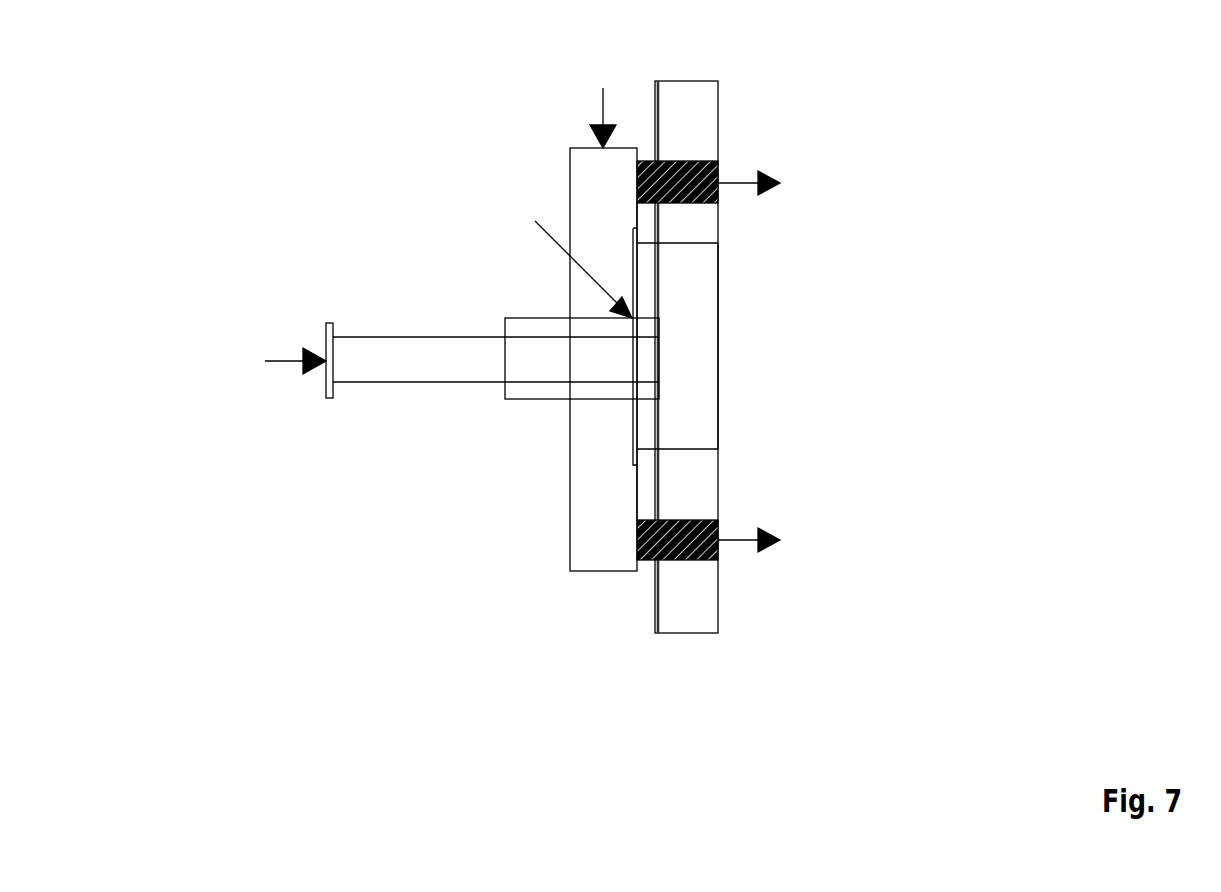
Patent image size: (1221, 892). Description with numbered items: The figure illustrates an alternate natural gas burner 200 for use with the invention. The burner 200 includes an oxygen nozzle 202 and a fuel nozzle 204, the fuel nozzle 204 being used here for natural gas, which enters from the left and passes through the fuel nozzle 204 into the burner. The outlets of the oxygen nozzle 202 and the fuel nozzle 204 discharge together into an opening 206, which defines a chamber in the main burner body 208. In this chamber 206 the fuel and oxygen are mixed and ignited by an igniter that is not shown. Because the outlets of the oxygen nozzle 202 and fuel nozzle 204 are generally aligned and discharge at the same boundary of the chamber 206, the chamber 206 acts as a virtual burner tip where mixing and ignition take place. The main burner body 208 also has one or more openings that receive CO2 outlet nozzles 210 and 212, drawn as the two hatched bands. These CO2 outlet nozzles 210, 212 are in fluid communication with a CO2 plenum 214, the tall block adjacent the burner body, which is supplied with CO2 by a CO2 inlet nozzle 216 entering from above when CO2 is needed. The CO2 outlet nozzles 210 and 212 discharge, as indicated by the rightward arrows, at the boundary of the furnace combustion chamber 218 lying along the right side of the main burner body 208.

The natural gas burner 200 is at (737, 64).
The oxygen nozzle 202 is at (515, 317).
The fuel nozzle 204 is at (392, 337).
The opening 206 is at (702, 341).
The main burner body 208 is at (665, 80).
The CO2 outlet nozzle 210 is at (703, 160).
The CO2 outlet nozzle 212 is at (707, 520).
The CO2 plenum 214 is at (570, 522).
The CO2 inlet nozzle 216 is at (444, 96).
The furnace combustion chamber 218 is at (730, 394).